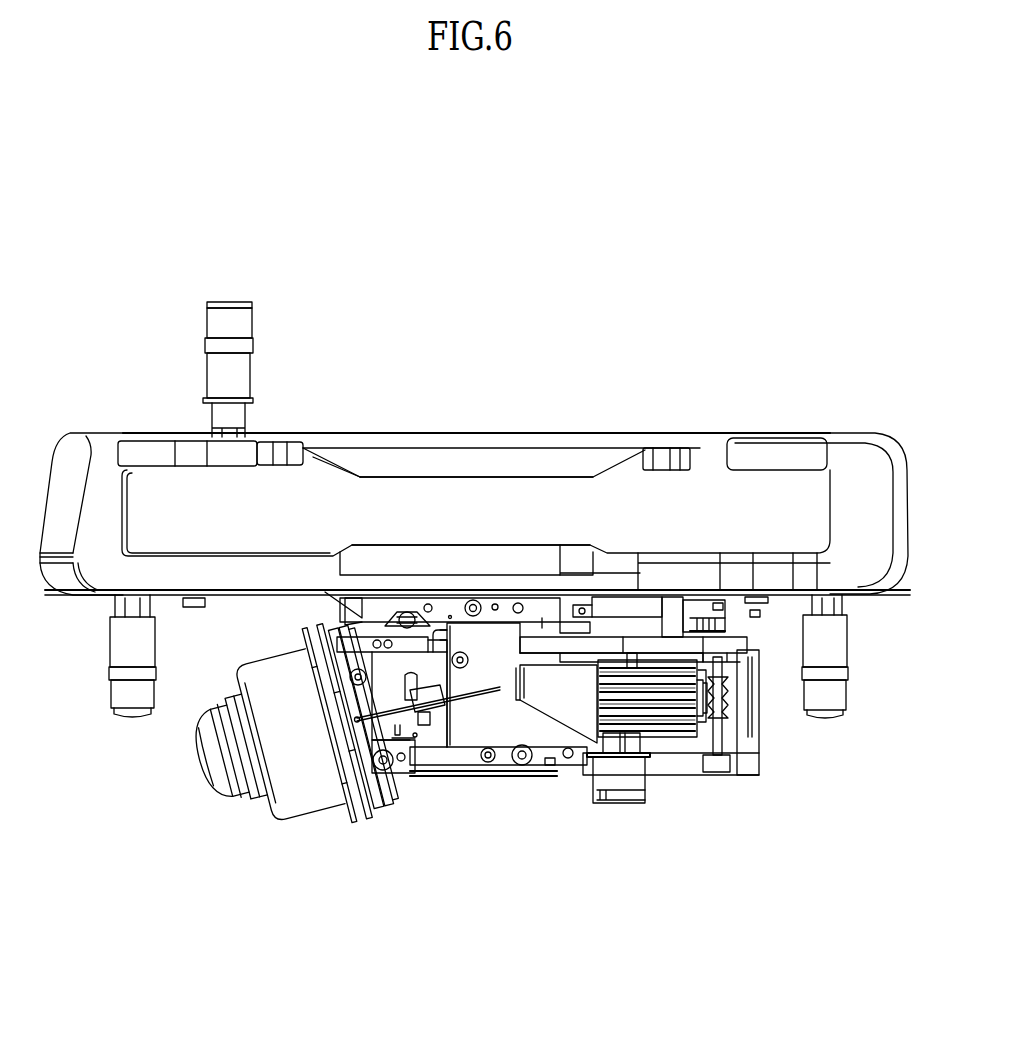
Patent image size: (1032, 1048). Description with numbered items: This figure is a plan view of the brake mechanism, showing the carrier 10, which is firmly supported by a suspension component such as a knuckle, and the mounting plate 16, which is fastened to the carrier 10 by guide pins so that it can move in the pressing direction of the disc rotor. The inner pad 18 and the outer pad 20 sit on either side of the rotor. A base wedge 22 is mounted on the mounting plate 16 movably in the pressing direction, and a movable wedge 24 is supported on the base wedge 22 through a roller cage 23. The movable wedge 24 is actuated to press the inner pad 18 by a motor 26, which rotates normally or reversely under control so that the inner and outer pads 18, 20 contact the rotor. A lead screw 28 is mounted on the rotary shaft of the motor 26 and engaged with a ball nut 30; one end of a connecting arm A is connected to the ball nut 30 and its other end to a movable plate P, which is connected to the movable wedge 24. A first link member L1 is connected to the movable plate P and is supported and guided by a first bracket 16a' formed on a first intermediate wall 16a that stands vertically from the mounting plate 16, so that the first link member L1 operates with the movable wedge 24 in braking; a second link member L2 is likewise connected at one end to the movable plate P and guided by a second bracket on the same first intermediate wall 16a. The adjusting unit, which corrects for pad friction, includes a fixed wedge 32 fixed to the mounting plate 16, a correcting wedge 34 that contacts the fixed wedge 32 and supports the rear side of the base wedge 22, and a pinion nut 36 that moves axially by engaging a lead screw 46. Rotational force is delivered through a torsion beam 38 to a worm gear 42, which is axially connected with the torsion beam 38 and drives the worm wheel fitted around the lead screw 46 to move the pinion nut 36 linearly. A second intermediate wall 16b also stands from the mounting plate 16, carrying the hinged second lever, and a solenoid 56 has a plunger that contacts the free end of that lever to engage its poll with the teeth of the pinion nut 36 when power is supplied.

The carrier 10 is at (830, 442).
The mounting plate 16 is at (760, 743).
The first intermediate wall 16a is at (713, 645).
The first bracket 16a' is at (694, 502).
The second intermediate wall 16b is at (633, 740).
The inner pad 18 is at (468, 552).
The outer pad 20 is at (428, 458).
The base wedge 22 is at (347, 610).
The roller cage 23 is at (408, 607).
The movable wedge 24 is at (390, 608).
The motor 26 is at (287, 810).
The lead screw 28 is at (393, 777).
The ball nut 30 is at (355, 820).
The fixed wedge 32 is at (493, 728).
The correcting wedge 34 is at (567, 708).
The pinion nut 36 is at (682, 733).
The torsion beam 38 is at (730, 645).
The worm gear 42 is at (718, 733).
The lead screw 46 is at (733, 710).
The solenoid 56 is at (623, 787).
The connecting arm A is at (450, 613).
The movable plate P is at (450, 617).
The first link member L1 is at (542, 623).
The second link member L2 is at (607, 607).